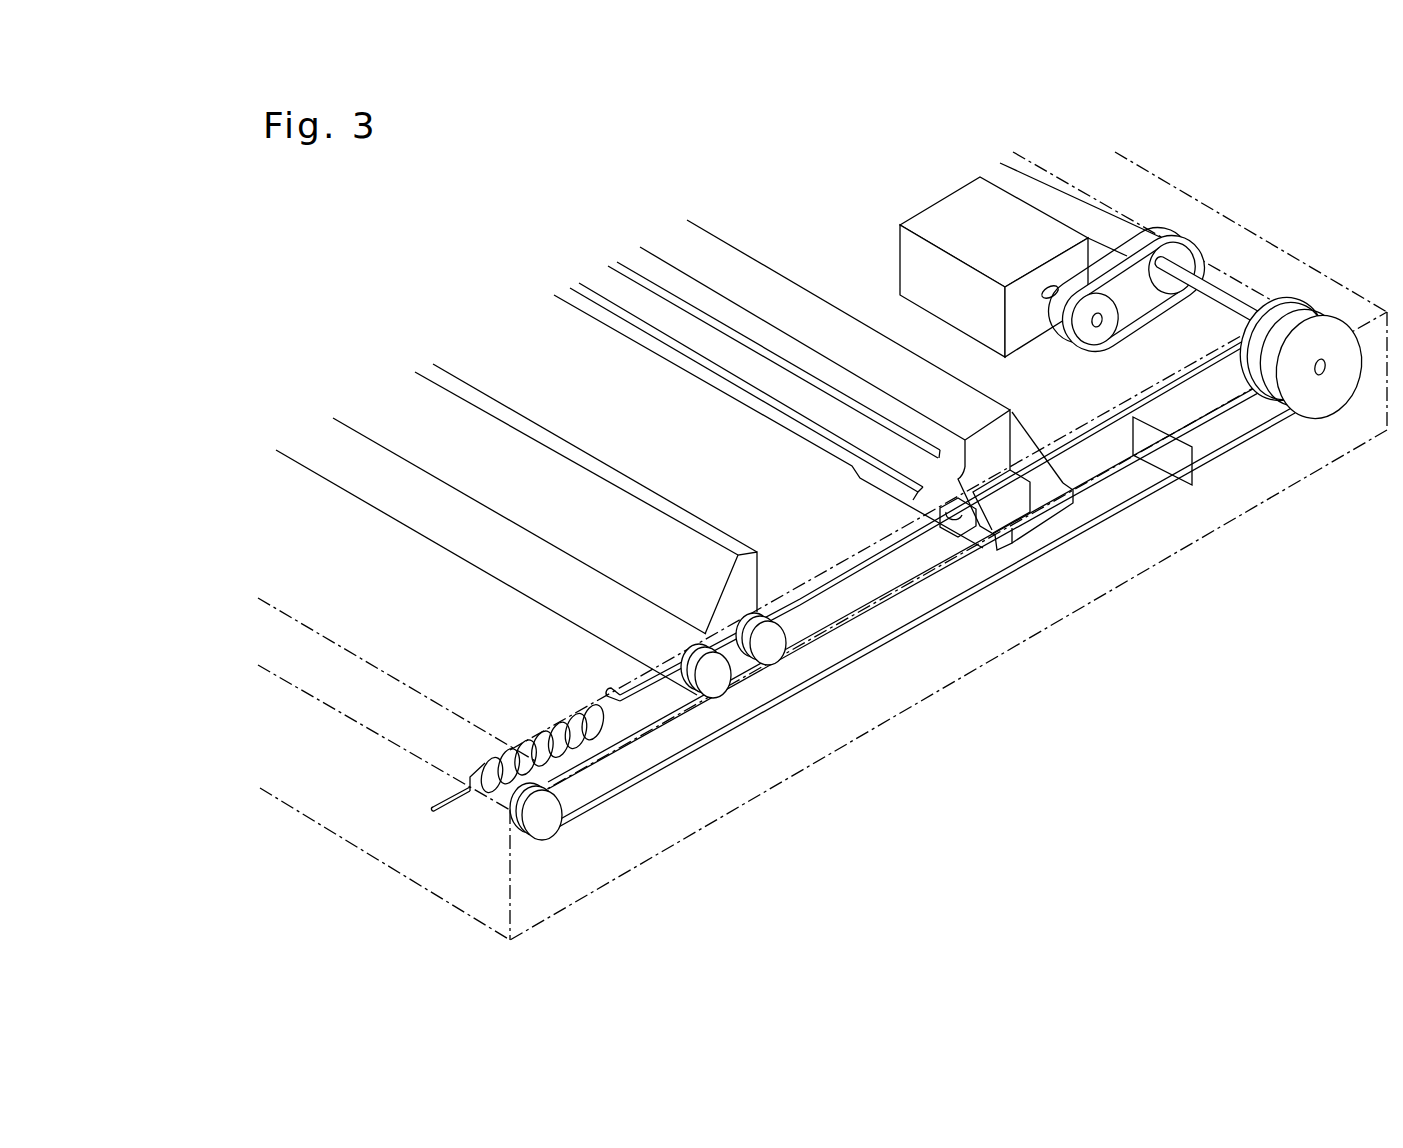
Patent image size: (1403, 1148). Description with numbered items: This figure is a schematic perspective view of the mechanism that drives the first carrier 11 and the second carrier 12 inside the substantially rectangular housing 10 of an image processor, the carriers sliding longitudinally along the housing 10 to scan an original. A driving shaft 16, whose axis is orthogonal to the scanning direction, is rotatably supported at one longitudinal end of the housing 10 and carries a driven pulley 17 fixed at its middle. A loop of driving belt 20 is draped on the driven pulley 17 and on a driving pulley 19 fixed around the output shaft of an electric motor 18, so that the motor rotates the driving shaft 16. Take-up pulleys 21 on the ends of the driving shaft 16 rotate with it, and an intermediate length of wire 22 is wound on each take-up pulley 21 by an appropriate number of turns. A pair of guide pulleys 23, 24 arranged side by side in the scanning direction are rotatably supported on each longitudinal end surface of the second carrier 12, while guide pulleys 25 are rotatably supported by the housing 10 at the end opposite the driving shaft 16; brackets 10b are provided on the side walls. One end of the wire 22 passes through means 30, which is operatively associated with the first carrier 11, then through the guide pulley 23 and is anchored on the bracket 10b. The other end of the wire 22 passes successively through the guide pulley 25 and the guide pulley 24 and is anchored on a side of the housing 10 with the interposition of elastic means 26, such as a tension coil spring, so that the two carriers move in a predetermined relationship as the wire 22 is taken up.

The housing 10 is at (1030, 627).
The bracket 10b is at (1173, 450).
The first carrier 11 is at (782, 289).
The second carrier 12 is at (573, 448).
The driving shaft 16 is at (1213, 303).
The driven pulley 17 is at (1180, 257).
The electric motor 18 is at (955, 216).
The driving pulley 19 is at (1096, 335).
The driving belt 20 is at (1110, 263).
The take-up pulley 21 is at (1337, 337).
The wire 22 is at (1165, 388).
The guide pulley 23 is at (767, 650).
The guide pulley 24 is at (705, 677).
The guide pulley 25 is at (548, 820).
The elastic means 26 is at (490, 773).
The means operatively associated with first carrier 30 is at (947, 527).